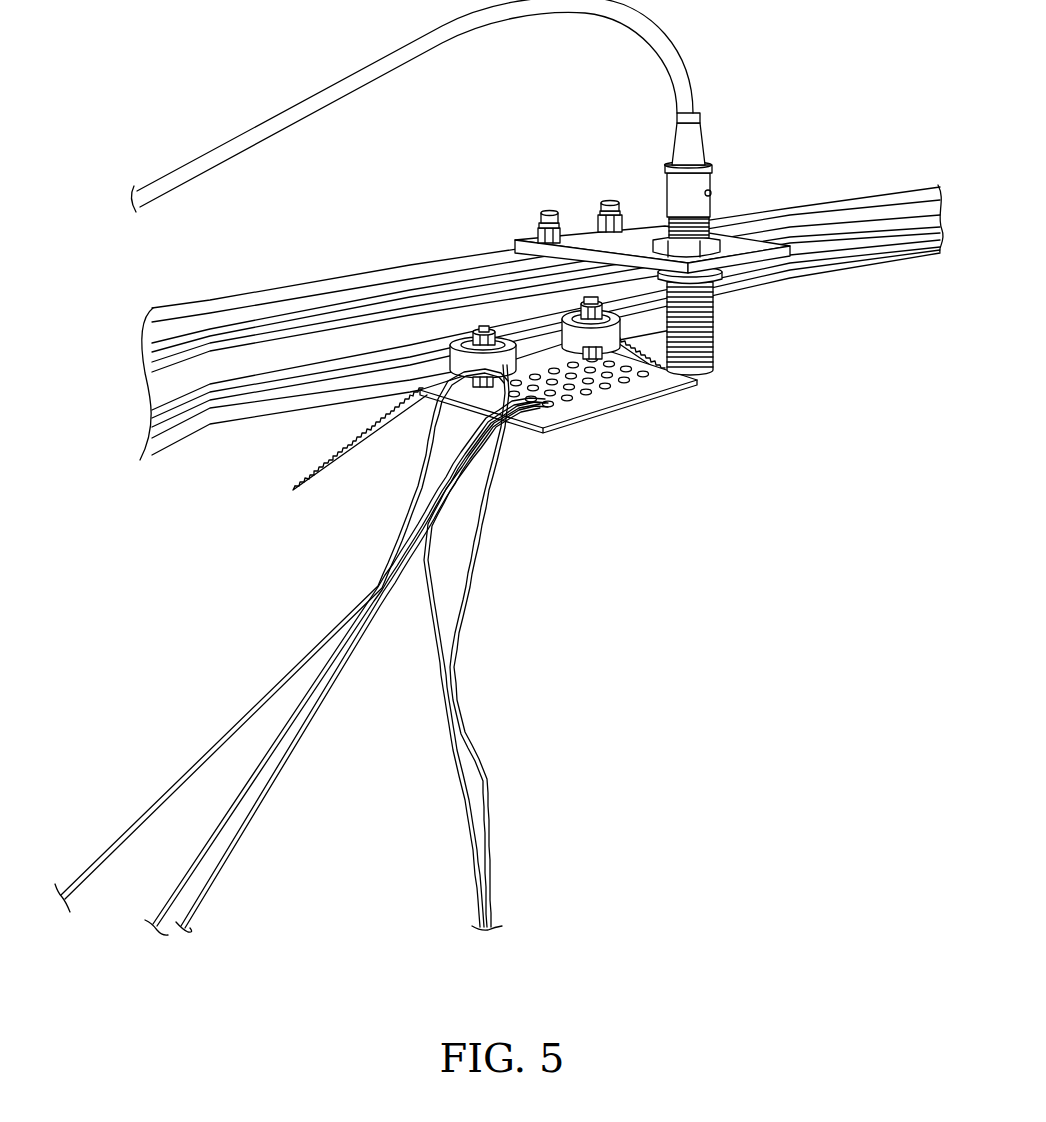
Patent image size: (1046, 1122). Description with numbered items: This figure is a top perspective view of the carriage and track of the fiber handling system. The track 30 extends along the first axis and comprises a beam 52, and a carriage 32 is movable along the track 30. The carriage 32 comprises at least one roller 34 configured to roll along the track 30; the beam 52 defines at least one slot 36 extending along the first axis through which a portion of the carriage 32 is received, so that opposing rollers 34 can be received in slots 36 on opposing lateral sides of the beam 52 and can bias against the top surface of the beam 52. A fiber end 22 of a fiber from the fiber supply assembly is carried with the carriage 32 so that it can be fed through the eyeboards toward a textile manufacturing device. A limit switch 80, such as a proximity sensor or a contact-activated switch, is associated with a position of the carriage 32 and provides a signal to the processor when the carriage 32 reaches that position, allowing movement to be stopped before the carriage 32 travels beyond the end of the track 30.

The fiber end 22 is at (573, 408).
The track 30 is at (848, 228).
The carriage 32 is at (517, 423).
The roller 34 is at (567, 320).
The slot 36 is at (313, 337).
The beam 52 is at (895, 228).
The limit switch 80 is at (697, 372).